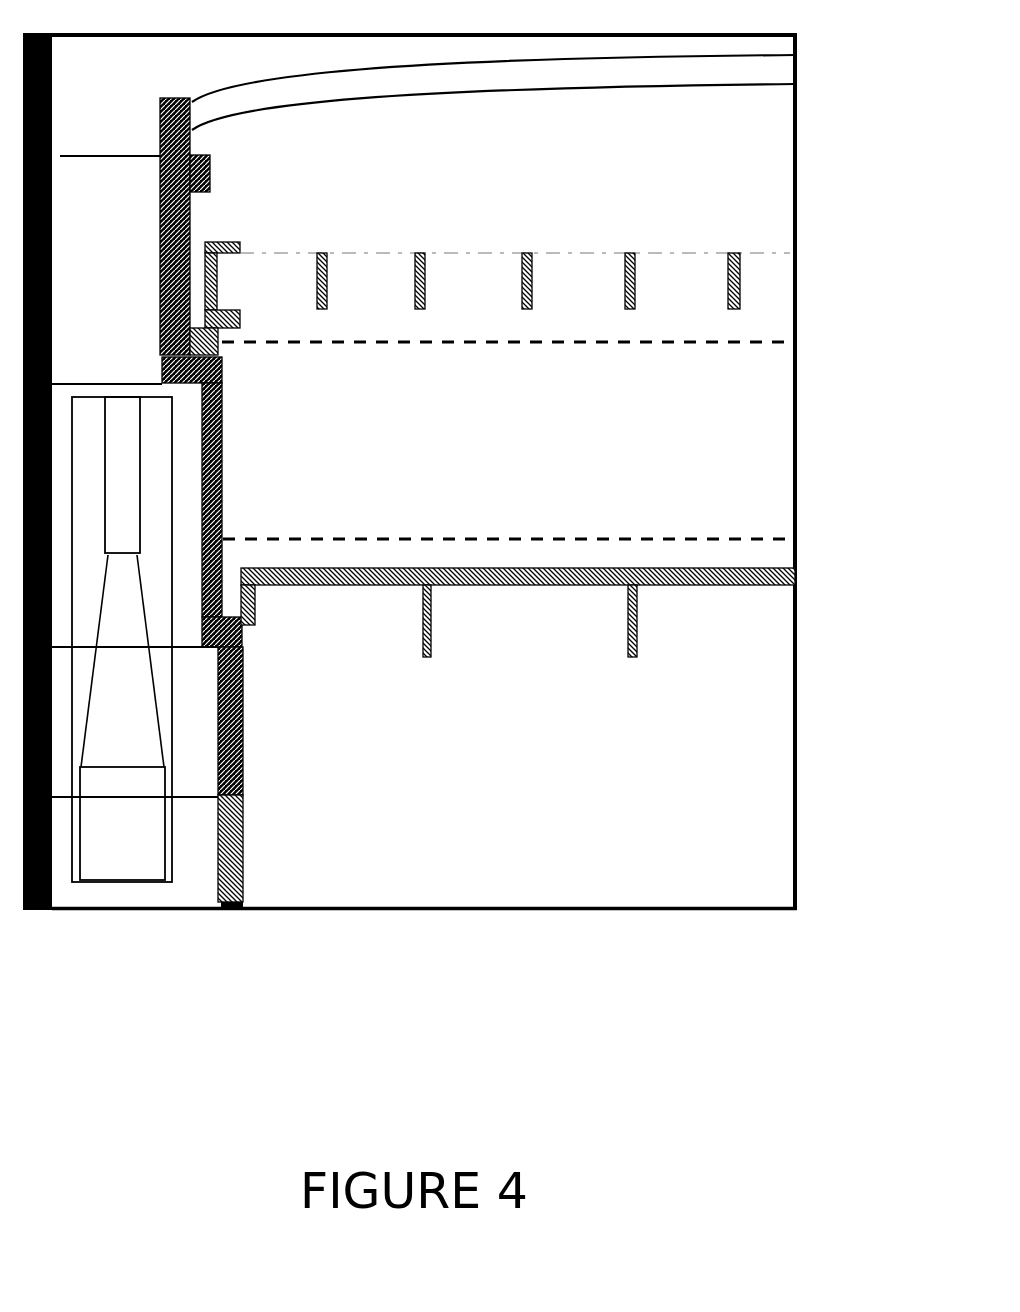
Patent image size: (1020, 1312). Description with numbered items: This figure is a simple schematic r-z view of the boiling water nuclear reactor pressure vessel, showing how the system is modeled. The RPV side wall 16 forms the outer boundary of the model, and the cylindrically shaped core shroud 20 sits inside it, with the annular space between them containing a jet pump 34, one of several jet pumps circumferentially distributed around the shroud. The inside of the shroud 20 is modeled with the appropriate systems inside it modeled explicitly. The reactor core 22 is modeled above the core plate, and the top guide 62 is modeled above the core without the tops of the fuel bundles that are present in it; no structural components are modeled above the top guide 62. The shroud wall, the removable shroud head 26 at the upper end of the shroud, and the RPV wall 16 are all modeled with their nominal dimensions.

The side wall 16 is at (66, 105).
The core shroud 20 is at (255, 738).
The reactor core 22 is at (662, 443).
The shroud head 26 is at (802, 75).
The jet pump 34 is at (184, 492).
The top guide 62 is at (777, 286).